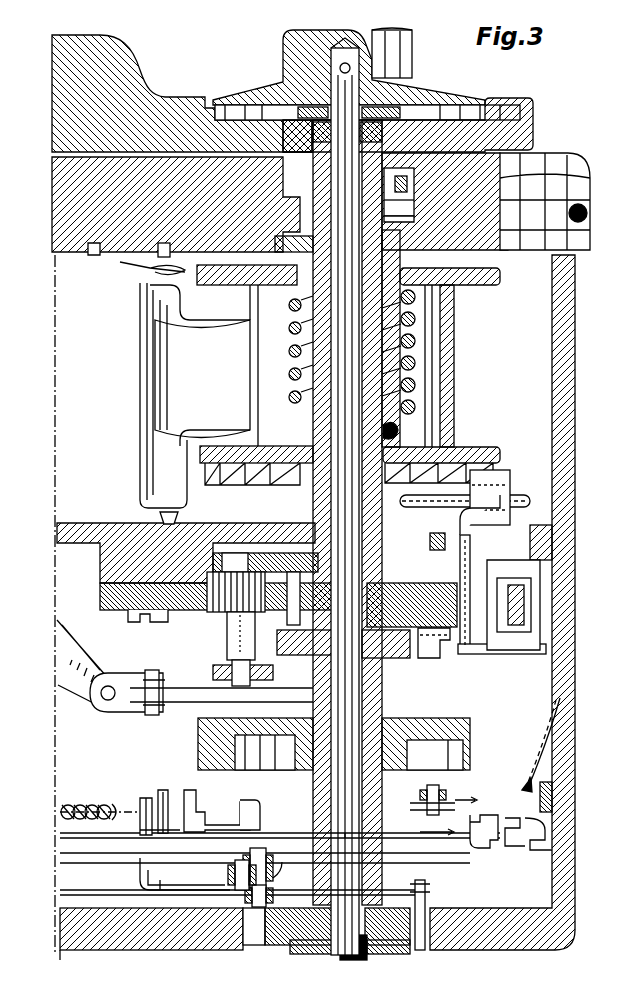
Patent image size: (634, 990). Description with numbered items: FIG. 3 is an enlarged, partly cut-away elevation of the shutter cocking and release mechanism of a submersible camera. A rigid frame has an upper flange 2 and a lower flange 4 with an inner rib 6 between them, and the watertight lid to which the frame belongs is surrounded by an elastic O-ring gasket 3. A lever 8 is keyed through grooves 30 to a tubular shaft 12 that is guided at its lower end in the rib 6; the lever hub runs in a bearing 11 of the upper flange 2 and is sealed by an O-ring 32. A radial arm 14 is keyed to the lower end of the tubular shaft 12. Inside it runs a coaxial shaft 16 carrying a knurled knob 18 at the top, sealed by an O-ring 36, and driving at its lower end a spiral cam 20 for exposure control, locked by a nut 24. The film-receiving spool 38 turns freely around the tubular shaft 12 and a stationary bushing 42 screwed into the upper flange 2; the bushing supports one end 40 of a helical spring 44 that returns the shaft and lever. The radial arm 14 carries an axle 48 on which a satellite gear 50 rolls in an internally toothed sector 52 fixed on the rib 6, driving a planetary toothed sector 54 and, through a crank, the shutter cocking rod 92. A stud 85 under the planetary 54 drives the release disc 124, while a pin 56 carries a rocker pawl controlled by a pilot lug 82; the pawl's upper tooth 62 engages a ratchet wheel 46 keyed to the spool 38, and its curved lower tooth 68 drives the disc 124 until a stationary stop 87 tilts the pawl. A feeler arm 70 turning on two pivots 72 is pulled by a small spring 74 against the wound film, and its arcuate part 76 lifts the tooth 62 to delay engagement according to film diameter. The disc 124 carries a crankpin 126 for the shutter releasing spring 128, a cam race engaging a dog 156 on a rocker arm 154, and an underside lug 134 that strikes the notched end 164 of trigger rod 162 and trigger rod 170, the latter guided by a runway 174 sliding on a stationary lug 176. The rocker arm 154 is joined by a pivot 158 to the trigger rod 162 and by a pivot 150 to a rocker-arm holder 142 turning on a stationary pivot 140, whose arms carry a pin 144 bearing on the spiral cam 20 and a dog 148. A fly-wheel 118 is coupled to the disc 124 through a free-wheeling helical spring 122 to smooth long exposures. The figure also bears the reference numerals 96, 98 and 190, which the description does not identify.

The upper flange 2 is at (80, 253).
The elastic O-ring gasket 3 is at (583, 210).
The lower flange 4 is at (117, 945).
The inner rib 6 is at (66, 524).
The lever 8 is at (128, 75).
The bearing 11 is at (272, 167).
The tubular shaft 12 is at (310, 146).
The radial arm 14 is at (216, 581).
The coaxial shaft 16 is at (392, 86).
The knurled knob 18 is at (412, 36).
The spiral cam 20 is at (275, 945).
The nut 24 is at (380, 956).
The grooves 30 is at (386, 214).
The O-ring 32 is at (410, 183).
The O-ring 36 is at (384, 131).
The film-receiving spool 38 is at (455, 360).
The spring end 40 is at (430, 288).
The stationary bushing 42 is at (427, 248).
The helical spring 44 is at (414, 365).
The ratchet wheel 46 is at (410, 450).
The axle 48 is at (238, 652).
The satellite gear 50 is at (230, 600).
The internally toothed sector 52 is at (188, 608).
The planetary toothed sector 54 is at (424, 582).
The pin 56 is at (465, 535).
The tooth 62 is at (505, 488).
The curved tooth 68 is at (428, 636).
The feeler arm 70 is at (150, 397).
The pivots 72 is at (178, 246).
The small spring 74 is at (140, 265).
The arcuate part 76 is at (530, 501).
The pilot lug 82 is at (540, 568).
The stud 85 is at (287, 622).
The stationary stop 87 is at (436, 533).
The shutter cocking rod 92 is at (188, 703).
The lever 96 is at (95, 667).
The clevis 98 is at (115, 710).
The fly-wheel 118 is at (200, 745).
The free-wheeling device 122 is at (410, 760).
The revolving disc 124 is at (190, 790).
The crankpin 126 is at (440, 796).
The shutter releasing spring 128 is at (100, 806).
The lug 134 is at (270, 820).
The stationary pivot 140 is at (248, 905).
The rocker-arm holder 142 is at (148, 878).
The pin 144 is at (425, 940).
The dog 148 is at (143, 810).
The pivot 150 is at (212, 895).
The rocker arm 154 is at (170, 830).
The dog 156 is at (166, 792).
The pivot 158 is at (283, 874).
The trigger rod 162 is at (435, 855).
The notched end 164 is at (474, 825).
The trigger rod 170 is at (300, 848).
The runway 174 is at (510, 850).
The stationary lug 176 is at (540, 843).
The arm 190 is at (538, 798).